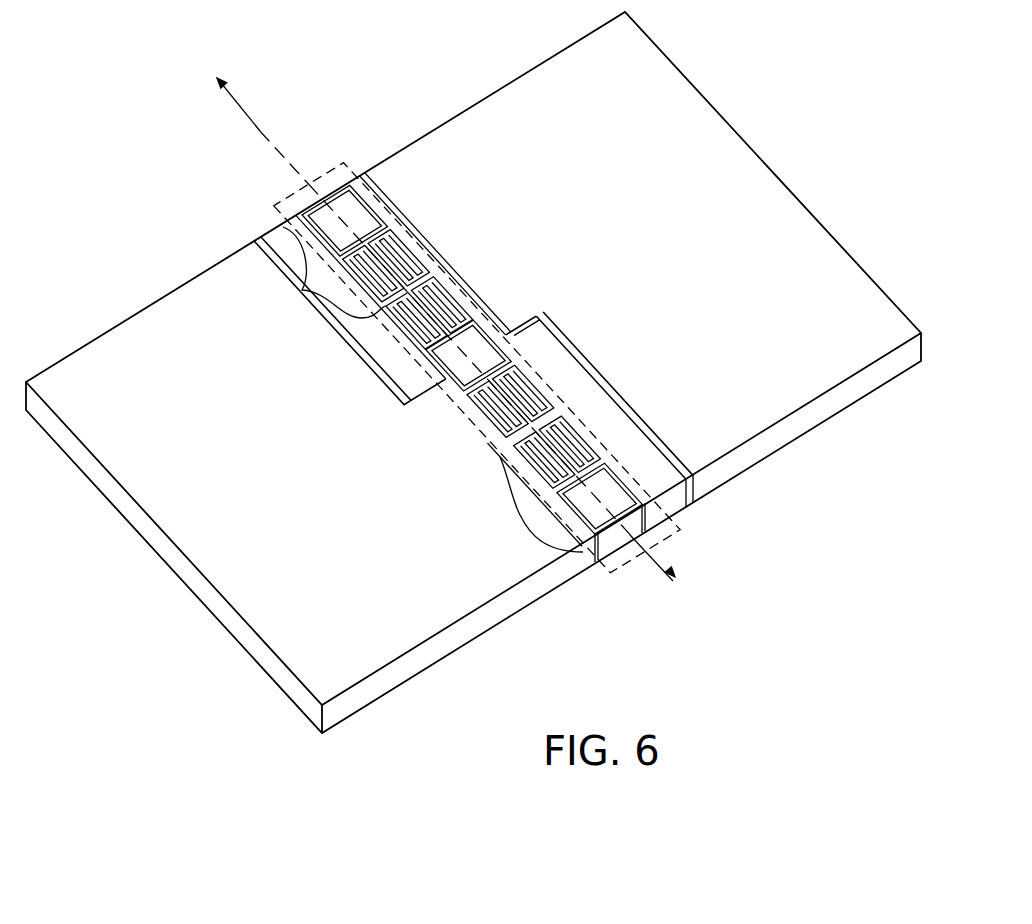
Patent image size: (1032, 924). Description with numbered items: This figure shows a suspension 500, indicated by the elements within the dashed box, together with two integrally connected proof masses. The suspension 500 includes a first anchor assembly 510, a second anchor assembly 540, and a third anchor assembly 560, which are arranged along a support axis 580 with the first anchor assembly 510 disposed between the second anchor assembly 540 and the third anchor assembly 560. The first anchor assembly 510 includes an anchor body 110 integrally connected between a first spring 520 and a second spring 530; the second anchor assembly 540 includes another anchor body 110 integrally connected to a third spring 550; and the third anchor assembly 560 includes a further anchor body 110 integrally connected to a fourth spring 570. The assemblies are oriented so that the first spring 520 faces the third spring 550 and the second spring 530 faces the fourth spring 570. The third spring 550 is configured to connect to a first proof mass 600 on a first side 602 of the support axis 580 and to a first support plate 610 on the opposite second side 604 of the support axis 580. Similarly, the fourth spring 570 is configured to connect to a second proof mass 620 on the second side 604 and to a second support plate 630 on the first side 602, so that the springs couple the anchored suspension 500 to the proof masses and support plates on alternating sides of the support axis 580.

The first proof mass 600 is at (625, 113).
The second proof mass 620 is at (316, 595).
The suspension 500 is at (680, 527).
The first side 602 is at (345, 138).
The second side 604 is at (260, 131).
The support axis 580 is at (260, 131).
The anchor body 110 is at (310, 203).
The third spring 550 is at (402, 233).
The first spring 520 is at (453, 292).
The second spring 530 is at (548, 382).
The fourth spring 570 is at (587, 428).
The first support plate 610 is at (273, 240).
The second support plate 630 is at (640, 430).
The second anchor assembly 540 is at (302, 290).
The first anchor assembly 510 is at (500, 455).
The third anchor assembly 560 is at (528, 531).